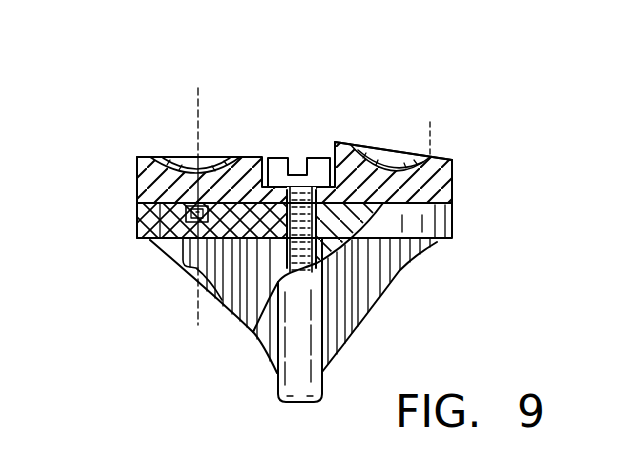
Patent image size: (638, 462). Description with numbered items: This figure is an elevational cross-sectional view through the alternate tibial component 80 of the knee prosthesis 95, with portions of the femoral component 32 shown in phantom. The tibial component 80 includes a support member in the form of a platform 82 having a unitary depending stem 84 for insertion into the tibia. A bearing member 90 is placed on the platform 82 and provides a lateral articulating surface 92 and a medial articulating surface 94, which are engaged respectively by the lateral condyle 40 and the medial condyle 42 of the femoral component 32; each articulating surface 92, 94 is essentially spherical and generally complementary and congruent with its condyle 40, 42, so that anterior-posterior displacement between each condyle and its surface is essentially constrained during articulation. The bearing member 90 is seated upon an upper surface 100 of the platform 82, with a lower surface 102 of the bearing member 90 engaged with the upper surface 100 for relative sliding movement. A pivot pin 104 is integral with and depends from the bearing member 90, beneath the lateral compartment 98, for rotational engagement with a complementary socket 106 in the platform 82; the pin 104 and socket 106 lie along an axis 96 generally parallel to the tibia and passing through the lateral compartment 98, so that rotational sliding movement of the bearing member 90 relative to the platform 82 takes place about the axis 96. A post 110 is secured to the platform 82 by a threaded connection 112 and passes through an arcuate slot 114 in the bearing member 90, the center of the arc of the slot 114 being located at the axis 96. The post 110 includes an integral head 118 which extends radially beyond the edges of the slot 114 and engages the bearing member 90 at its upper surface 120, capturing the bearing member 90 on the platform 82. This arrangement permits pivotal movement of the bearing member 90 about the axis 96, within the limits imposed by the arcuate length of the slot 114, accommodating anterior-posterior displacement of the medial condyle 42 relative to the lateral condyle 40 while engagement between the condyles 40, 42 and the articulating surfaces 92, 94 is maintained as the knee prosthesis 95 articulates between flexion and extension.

The femoral component 32 is at (150, 119).
The lateral condyle 40 is at (158, 158).
The medial condyle 42 is at (433, 143).
The tibial component 80 is at (470, 202).
The platform 82 is at (455, 228).
The stem 84 is at (352, 303).
The bearing member 90 is at (457, 173).
The lateral articulating surface 92 is at (213, 155).
The medial articulating surface 94 is at (397, 150).
The knee prosthesis 95 is at (441, 248).
The axis 96 is at (197, 120).
The lateral compartment 98 is at (200, 155).
The upper surface 100 is at (137, 180).
The lower surface 102 is at (137, 212).
The pivot pin 104 is at (137, 228).
The socket 106 is at (177, 217).
The post 110 is at (347, 155).
The threaded connection 112 is at (253, 333).
The arcuate slot 114 is at (255, 235).
The head 118 is at (282, 155).
The upper surface 120 is at (285, 155).